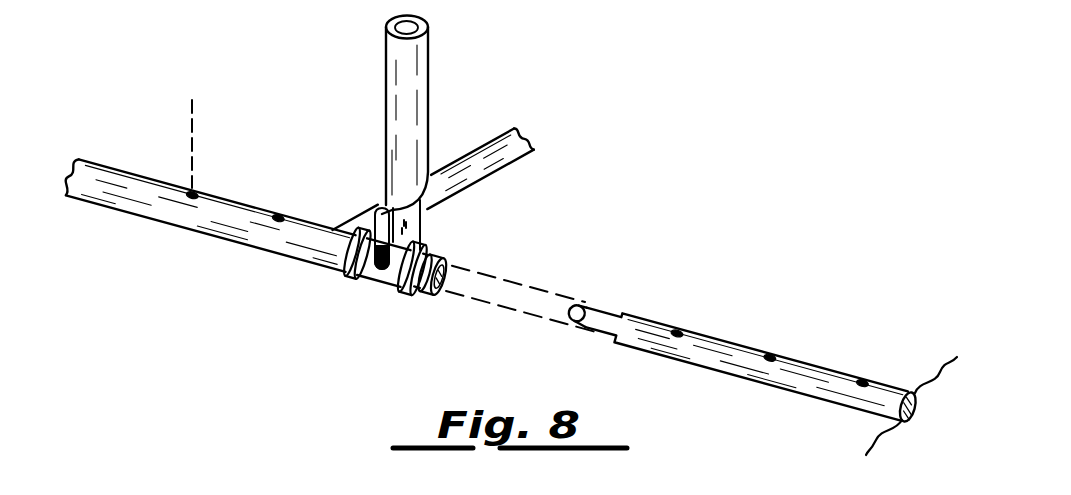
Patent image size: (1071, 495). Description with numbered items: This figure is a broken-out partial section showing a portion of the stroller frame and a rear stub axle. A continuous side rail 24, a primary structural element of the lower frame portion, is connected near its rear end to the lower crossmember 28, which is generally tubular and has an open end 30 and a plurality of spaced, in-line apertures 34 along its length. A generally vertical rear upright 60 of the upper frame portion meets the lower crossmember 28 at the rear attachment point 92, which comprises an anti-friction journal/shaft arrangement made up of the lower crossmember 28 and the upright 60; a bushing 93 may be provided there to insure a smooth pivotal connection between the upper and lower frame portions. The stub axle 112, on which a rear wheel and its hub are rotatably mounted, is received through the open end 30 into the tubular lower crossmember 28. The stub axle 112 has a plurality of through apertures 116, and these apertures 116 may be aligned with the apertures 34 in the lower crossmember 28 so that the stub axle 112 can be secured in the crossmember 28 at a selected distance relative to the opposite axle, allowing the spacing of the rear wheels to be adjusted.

The side rail 24 is at (511, 160).
The lower crossmember 28 is at (223, 215).
The open end 30 is at (448, 287).
The aperture 34 is at (195, 193).
The rear upright 60 is at (410, 77).
The rear attachment point 92 is at (357, 300).
The bushing 93 is at (413, 290).
The stub axle 112 is at (820, 377).
The through aperture 116 is at (678, 332).